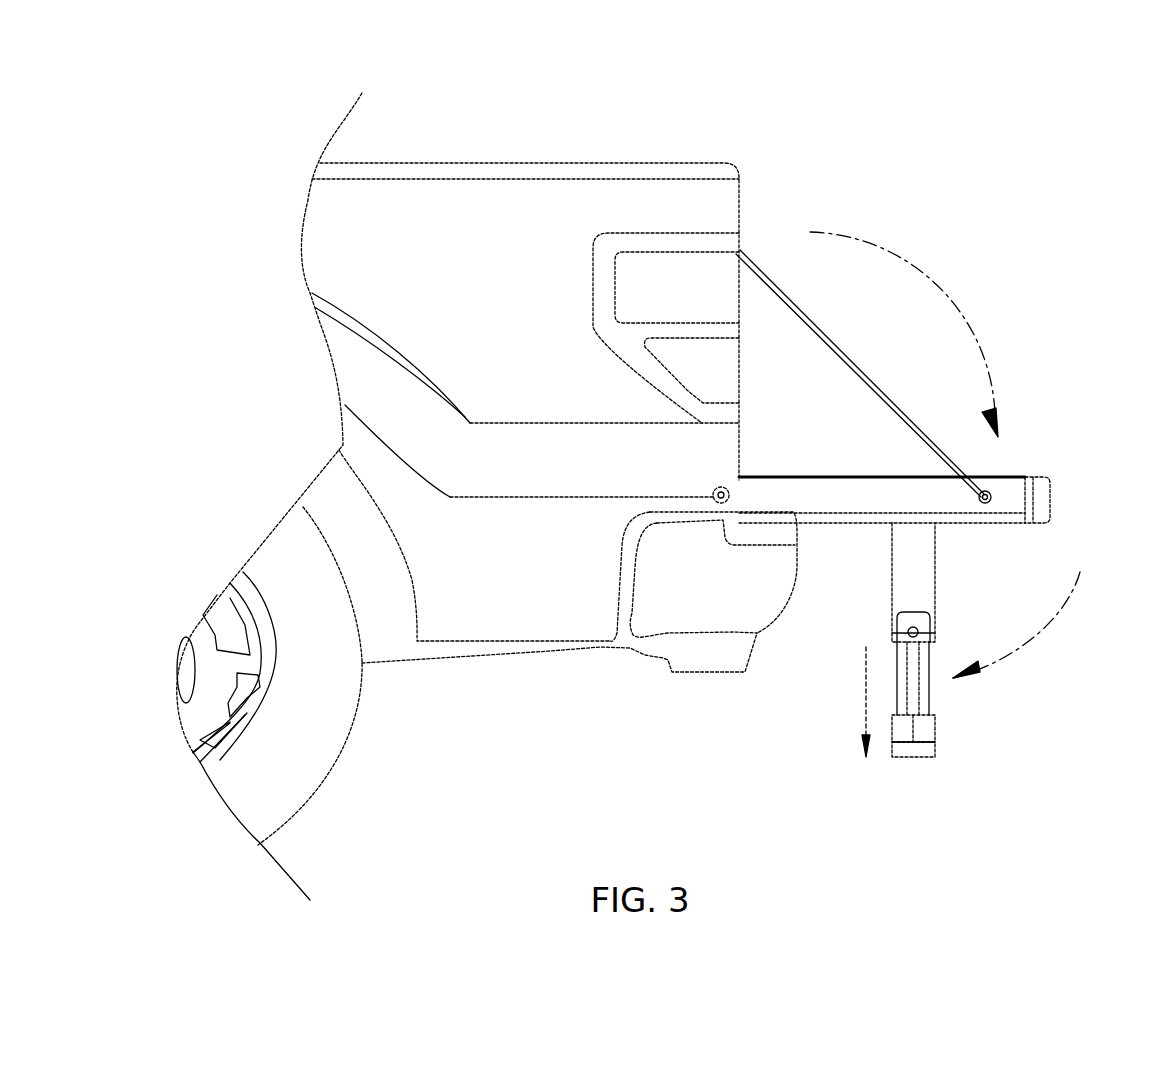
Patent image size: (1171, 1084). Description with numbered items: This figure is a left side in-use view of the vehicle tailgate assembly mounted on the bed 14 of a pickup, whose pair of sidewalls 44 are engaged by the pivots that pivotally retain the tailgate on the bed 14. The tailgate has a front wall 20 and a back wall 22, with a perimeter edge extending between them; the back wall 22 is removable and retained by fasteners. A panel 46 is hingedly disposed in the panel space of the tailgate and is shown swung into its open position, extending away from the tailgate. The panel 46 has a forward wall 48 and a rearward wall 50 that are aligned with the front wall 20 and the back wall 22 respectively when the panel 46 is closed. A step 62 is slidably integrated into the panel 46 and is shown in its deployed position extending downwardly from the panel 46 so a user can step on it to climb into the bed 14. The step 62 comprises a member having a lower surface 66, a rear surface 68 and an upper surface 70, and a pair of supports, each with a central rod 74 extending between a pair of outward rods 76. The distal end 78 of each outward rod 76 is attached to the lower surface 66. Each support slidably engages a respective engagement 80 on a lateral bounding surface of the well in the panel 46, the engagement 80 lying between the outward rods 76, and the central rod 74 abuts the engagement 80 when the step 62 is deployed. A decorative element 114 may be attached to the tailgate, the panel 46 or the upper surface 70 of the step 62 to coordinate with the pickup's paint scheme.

The bed 14 is at (663, 143).
The sidewalls 44 is at (567, 207).
The central rod 74 is at (912, 612).
The back wall 22 is at (1010, 476).
The front wall 20 is at (1009, 524).
The decorative element 114 is at (1052, 494).
The forward wall 48 is at (890, 570).
The panel 46 is at (890, 607).
The engagements 80 is at (937, 603).
The rearward wall 50 is at (937, 603).
The outward rods 76 is at (897, 688).
The lower surface 66 is at (897, 712).
The rear surface 68 is at (923, 720).
The distal end 78 is at (898, 768).
The step 62 is at (920, 720).
The upper surface 70 is at (920, 717).